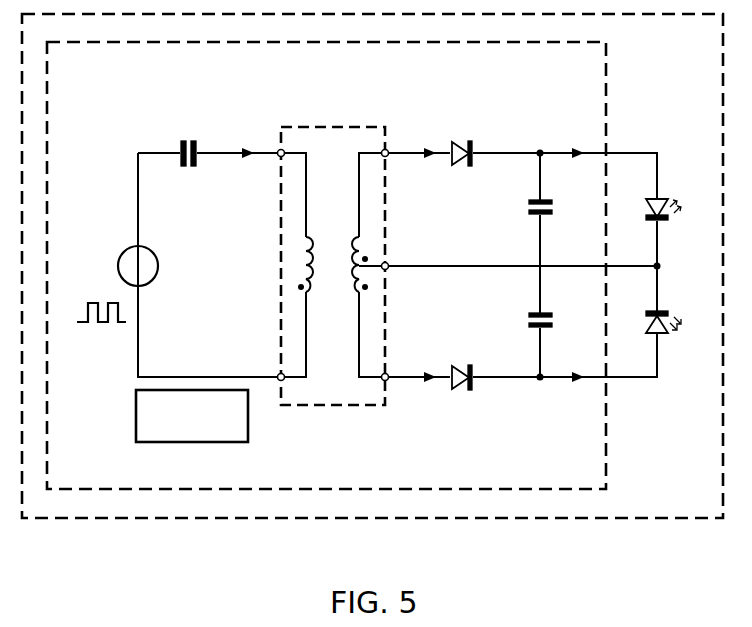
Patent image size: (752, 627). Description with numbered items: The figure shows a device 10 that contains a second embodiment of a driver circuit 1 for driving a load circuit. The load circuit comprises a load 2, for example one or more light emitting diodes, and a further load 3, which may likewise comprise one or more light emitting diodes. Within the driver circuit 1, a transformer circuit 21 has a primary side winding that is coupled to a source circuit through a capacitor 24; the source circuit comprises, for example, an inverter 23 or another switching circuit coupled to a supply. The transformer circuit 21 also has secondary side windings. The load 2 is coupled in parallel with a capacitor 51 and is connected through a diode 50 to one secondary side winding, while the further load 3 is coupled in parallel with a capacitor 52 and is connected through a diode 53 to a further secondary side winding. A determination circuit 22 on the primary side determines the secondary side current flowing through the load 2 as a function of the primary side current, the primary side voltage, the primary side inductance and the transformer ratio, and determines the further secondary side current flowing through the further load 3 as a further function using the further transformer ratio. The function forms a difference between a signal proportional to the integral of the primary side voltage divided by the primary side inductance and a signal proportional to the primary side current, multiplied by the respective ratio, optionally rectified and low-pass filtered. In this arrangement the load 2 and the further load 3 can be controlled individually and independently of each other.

The driver circuit 1 is at (607, 460).
The load 2 is at (665, 196).
The further load 3 is at (665, 336).
The device 10 is at (677, 519).
The transformer circuit 21 is at (342, 126).
The determination circuit 22 is at (135, 413).
The inverter 23 is at (159, 266).
The capacitor 24 is at (191, 138).
The diode 50 is at (460, 140).
The capacitor 51 is at (528, 207).
The capacitor 52 is at (528, 319).
The diode 53 is at (462, 392).